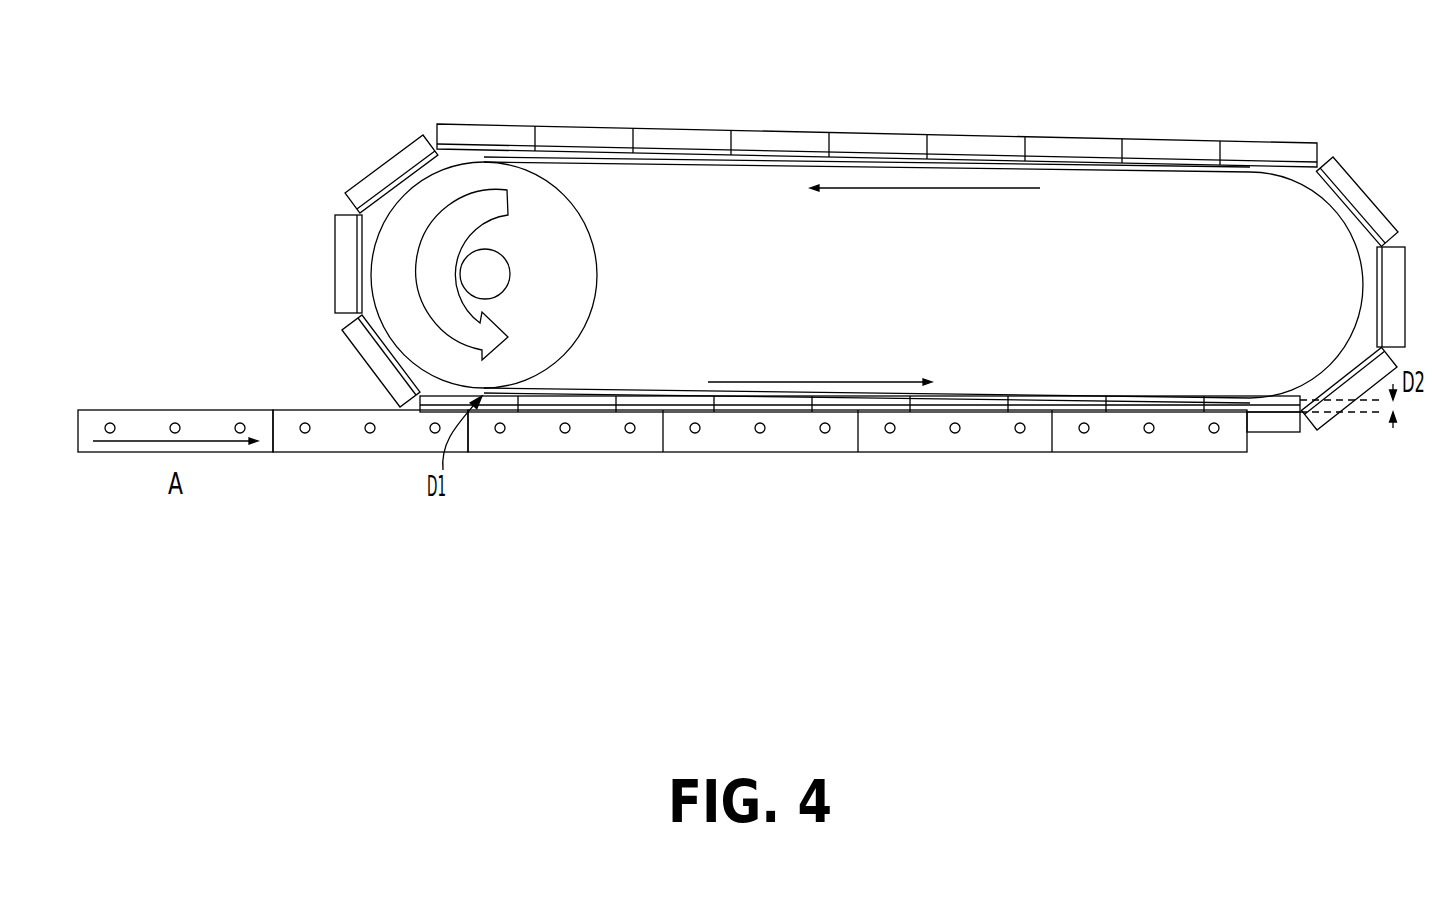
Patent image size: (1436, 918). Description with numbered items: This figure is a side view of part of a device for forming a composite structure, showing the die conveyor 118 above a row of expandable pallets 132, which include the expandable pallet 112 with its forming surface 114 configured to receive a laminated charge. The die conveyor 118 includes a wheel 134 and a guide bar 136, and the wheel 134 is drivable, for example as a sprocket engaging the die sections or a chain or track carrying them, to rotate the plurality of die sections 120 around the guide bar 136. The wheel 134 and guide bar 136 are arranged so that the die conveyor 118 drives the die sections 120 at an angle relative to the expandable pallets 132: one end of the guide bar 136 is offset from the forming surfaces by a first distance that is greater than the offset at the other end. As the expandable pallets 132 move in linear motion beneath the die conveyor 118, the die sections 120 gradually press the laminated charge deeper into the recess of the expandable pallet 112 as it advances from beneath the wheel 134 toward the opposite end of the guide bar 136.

The expandable pallet 112 is at (1182, 452).
The forming surface 114 is at (305, 408).
The die conveyor 118 is at (345, 132).
The die sections 120 is at (332, 250).
The expandable pallets 132 is at (148, 378).
The wheel 134 is at (602, 248).
The guide bar 136 is at (1296, 184).